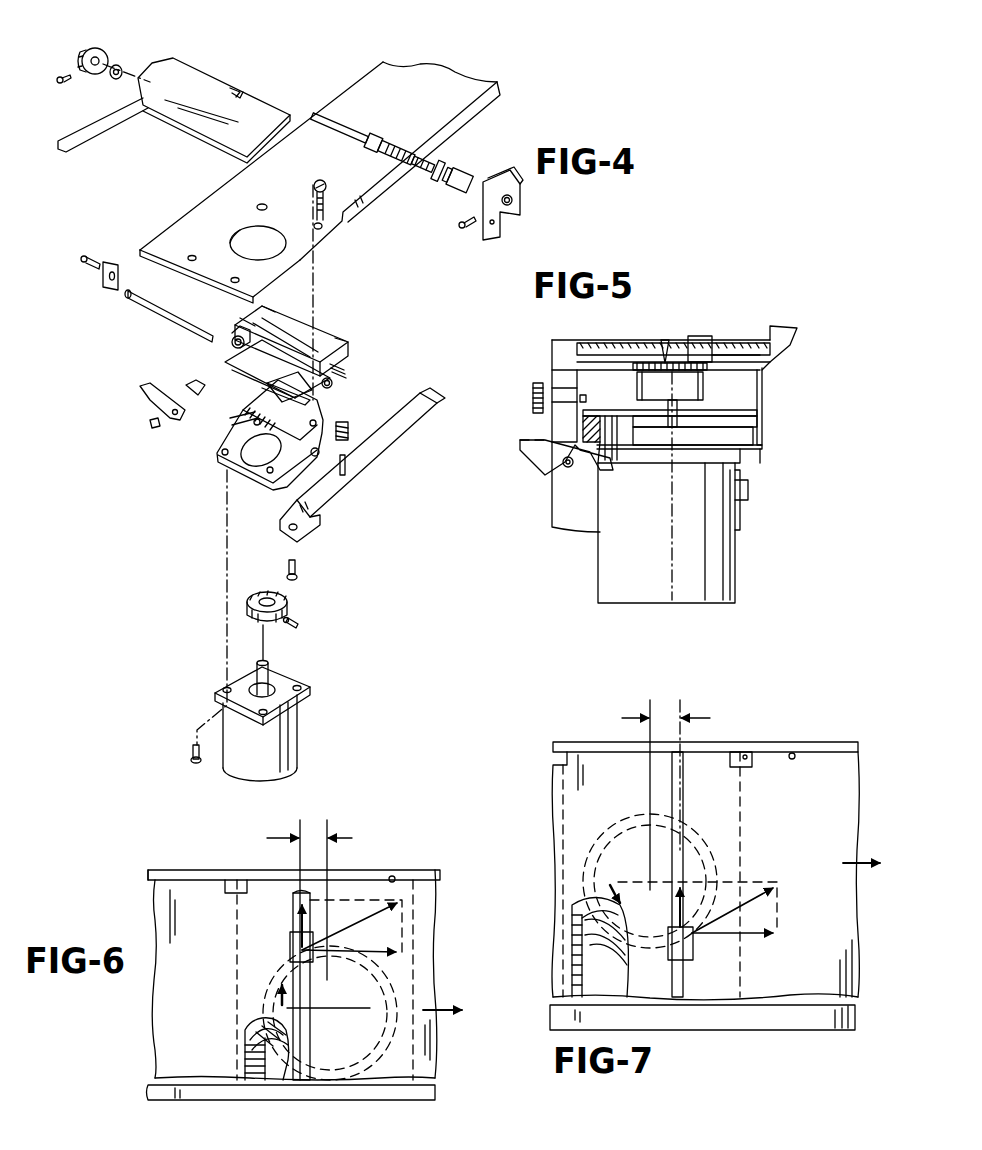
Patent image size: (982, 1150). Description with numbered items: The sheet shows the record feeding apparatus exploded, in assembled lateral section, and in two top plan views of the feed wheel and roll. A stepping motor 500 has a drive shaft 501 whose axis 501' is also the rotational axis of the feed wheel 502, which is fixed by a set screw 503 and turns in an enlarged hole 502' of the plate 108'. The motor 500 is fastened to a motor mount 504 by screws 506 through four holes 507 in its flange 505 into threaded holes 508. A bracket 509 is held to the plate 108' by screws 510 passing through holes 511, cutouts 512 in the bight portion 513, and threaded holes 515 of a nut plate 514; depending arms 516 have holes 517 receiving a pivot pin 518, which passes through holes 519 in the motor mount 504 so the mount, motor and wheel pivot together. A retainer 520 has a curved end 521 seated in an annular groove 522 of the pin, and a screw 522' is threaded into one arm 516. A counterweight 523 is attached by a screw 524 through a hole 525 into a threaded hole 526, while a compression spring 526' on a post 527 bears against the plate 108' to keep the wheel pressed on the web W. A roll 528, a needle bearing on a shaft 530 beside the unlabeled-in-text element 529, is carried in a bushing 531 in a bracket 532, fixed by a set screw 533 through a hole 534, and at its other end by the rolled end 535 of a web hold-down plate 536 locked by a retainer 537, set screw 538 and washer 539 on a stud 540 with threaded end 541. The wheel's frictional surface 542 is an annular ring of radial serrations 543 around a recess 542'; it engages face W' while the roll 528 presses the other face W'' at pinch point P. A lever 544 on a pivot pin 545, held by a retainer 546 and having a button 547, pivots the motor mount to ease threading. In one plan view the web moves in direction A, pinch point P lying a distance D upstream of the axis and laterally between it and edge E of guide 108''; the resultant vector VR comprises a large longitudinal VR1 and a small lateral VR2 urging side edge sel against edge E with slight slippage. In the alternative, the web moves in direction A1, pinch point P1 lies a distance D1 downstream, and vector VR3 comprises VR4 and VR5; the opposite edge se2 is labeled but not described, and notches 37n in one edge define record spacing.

In FIG. 4, the stepping motor 500 is at (298, 740).
In FIG. 5, the stepping motor 500 is at (735, 520).
In FIG. 4, the drive shaft 501 is at (295, 670).
In FIG. 5, the drive shaft 501 is at (690, 486).
In FIG. 4, the axis 501' is at (300, 642).
In FIG. 6, the axis 501' is at (330, 1013).
In FIG. 7, the axis 501' is at (650, 881).
In FIG. 4, the feed wheel 502 is at (201, 605).
In FIG. 5, the feed wheel 502 is at (696, 399).
In FIG. 6, the feed wheel 502 is at (222, 1050).
In FIG. 4, the enlarged hole 502' is at (237, 239).
In FIG. 4, the set screw 503 is at (296, 618).
In FIG. 4, the motor mount 504 is at (213, 452).
In FIG. 5, the motor mount 504 is at (612, 455).
In FIG. 4, the flange 505 is at (290, 700).
In FIG. 4, the screws 506 is at (188, 755).
In FIG. 4, the holes 507 is at (212, 690).
In FIG. 4, the threaded holes 508 is at (300, 395).
In FIG. 4, the bracket 509 is at (338, 325).
In FIG. 4, the screws 510 is at (318, 178).
In FIG. 4, the holes 511 is at (294, 196).
In FIG. 4, the cutouts 512 is at (262, 318).
In FIG. 4, the bight portion 513 is at (330, 322).
In FIG. 4, the nut plate 514 is at (235, 366).
In FIG. 4, the threaded holes 515 is at (310, 372).
In FIG. 4, the depending arms 516 is at (235, 328).
In FIG. 5, the depending arms 516 is at (583, 413).
In FIG. 4, the holes 517 is at (232, 345).
In FIG. 4, the pivot pin 518 is at (128, 288).
In FIG. 4, the holes 519 is at (245, 420).
In FIG. 4, the retainer 520 is at (100, 278).
In FIG. 4, the curved end 521 is at (112, 295).
In FIG. 4, the annular groove 522 is at (150, 317).
In FIG. 4, the screw 522' is at (80, 238).
In FIG. 4, the counterweight 523 is at (420, 465).
In FIG. 4, the screw 524 is at (302, 572).
In FIG. 4, the hole 525 is at (300, 538).
In FIG. 4, the threaded hole 526 is at (364, 379).
In FIG. 4, the compression spring 526' is at (376, 459).
In FIG. 4, the post 527 is at (347, 478).
In FIG. 4, the roll 528 is at (380, 135).
In FIG. 5, the roll 528 is at (700, 336).
In FIG. 4, the threaded shaft 529 is at (408, 148).
In FIG. 5, the threaded shaft 529 is at (748, 343).
In FIG. 4, the shaft 530 is at (330, 92).
In FIG. 4, the bushing 531 is at (470, 170).
In FIG. 4, the bracket 532 is at (520, 185).
In FIG. 4, the set screw 533 is at (455, 227).
In FIG. 4, the hole 534 is at (440, 184).
In FIG. 4, the rolled end 535 is at (220, 86).
In FIG. 5, the rolled end 535 is at (615, 340).
In FIG. 4, the web hold-down plate 536 is at (195, 80).
In FIG. 5, the web hold-down plate 536 is at (578, 338).
In FIG. 4, the retainer 537 is at (95, 48).
In FIG. 5, the retainer 537 is at (533, 393).
In FIG. 4, the set screw 538 is at (60, 74).
In FIG. 4, the washer 539 is at (120, 66).
In FIG. 5, the stud 540 is at (565, 388).
In FIG. 5, the threaded end 541 is at (586, 400).
In FIG. 4, the frictional surface 542 is at (233, 595).
In FIG. 6, the frictional surface 542 is at (239, 1030).
In FIG. 7, the frictional surface 542 is at (568, 948).
In FIG. 4, the recessed portion 542' is at (258, 575).
In FIG. 5, the recessed portion 542' is at (667, 339).
In FIG. 5, the serrations 543 is at (669, 340).
In FIG. 6, the serrations 543 is at (253, 1043).
In FIG. 7, the serrations 543 is at (595, 950).
In FIG. 4, the lever 544 is at (145, 398).
In FIG. 5, the lever 544 is at (528, 465).
In FIG. 5, the pivot pin 545 is at (560, 470).
In FIG. 4, the retainer 546 is at (190, 385).
In FIG. 4, the button 547 is at (150, 385).
In FIG. 5, the button 547 is at (520, 440).
In FIG. 4, the plate 108' is at (318, 140).
In FIG. 4, the guide 108'' is at (343, 192).
In FIG. 6, the guide 108'' is at (301, 849).
In FIG. 6, the web W is at (276, 975).
In FIG. 7, the web W is at (685, 876).
In FIG. 5, the face W' is at (669, 406).
In FIG. 5, the other face W'' is at (728, 333).
In FIG. 6, the other face W'' is at (453, 1050).
In FIG. 7, the other face W'' is at (531, 977).
In FIG. 6, the edge E is at (390, 872).
In FIG. 7, the edge E is at (788, 755).
In FIG. 6, the distance D is at (309, 950).
In FIG. 7, the distance D1 is at (666, 795).
In FIG. 6, the pinch point P is at (290, 948).
In FIG. 7, the pinch point P1 is at (670, 955).
In FIG. 6, the arrow A is at (442, 986).
In FIG. 7, the arrow A1 is at (866, 845).
In FIG. 6, the resultant force vector VR is at (360, 898).
In FIG. 6, the force vector VR1 is at (385, 955).
In FIG. 6, the force vector VR2 is at (290, 922).
In FIG. 7, the resultant force vector VR3 is at (740, 890).
In FIG. 7, the force vector VR4 is at (758, 940).
In FIG. 7, the force vector VR5 is at (675, 925).
In FIG. 6, the side edge sel is at (215, 870).
In FIG. 7, the side edge sel is at (602, 742).
In FIG. 6, the sensor element se2 is at (160, 1090).
In FIG. 7, the sensor element se2 is at (800, 1030).
In FIG. 7, the notches 37n is at (745, 752).